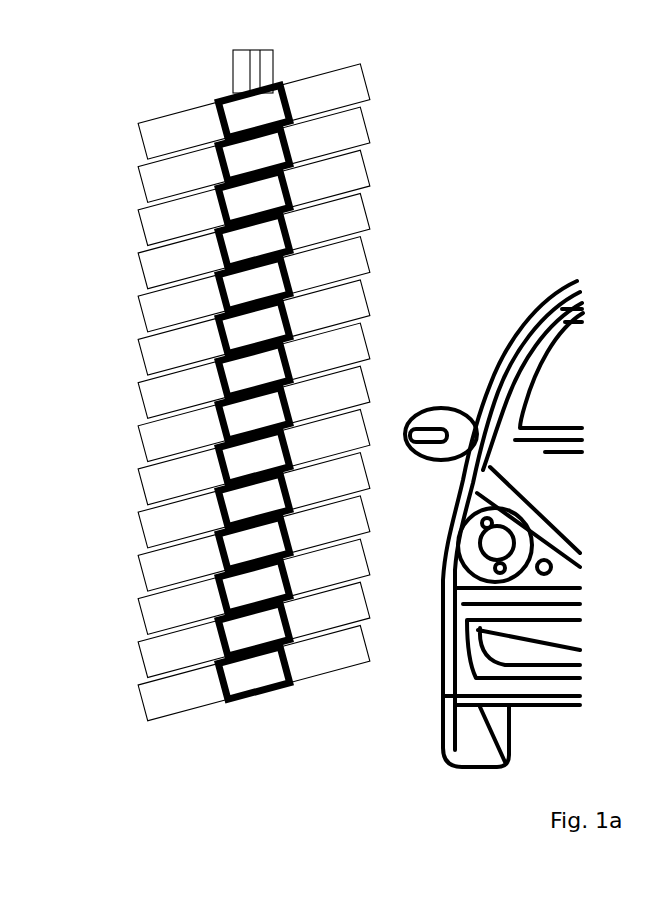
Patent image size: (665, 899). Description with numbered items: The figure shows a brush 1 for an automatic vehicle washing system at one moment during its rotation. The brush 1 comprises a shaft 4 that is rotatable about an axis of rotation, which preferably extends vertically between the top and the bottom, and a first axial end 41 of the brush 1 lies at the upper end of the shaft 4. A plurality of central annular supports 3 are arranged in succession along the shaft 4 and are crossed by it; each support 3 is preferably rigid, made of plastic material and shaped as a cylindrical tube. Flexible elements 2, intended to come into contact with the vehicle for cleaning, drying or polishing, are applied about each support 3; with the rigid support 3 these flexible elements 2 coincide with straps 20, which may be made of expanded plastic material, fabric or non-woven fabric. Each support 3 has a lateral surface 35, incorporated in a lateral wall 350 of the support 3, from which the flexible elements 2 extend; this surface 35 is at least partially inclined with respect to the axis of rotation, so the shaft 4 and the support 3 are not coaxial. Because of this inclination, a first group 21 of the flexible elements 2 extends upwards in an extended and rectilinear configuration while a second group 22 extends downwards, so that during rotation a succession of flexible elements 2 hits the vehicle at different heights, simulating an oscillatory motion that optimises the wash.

The brush 1 is at (287, 367).
The flexible elements 2 is at (287, 392).
The straps 20 is at (368, 172).
The first group of flexible elements 21 is at (353, 427).
The second group of flexible elements 22 is at (150, 377).
The central annular support 3 is at (241, 392).
The lateral surface 35 is at (241, 276).
The lateral wall 350 is at (272, 320).
The shaft 4 is at (179, 55).
The first axial end 41 is at (235, 62).